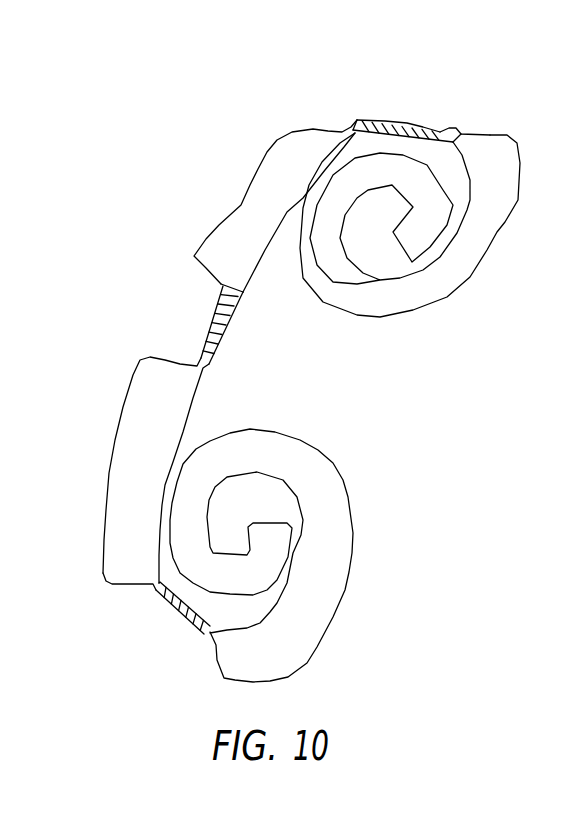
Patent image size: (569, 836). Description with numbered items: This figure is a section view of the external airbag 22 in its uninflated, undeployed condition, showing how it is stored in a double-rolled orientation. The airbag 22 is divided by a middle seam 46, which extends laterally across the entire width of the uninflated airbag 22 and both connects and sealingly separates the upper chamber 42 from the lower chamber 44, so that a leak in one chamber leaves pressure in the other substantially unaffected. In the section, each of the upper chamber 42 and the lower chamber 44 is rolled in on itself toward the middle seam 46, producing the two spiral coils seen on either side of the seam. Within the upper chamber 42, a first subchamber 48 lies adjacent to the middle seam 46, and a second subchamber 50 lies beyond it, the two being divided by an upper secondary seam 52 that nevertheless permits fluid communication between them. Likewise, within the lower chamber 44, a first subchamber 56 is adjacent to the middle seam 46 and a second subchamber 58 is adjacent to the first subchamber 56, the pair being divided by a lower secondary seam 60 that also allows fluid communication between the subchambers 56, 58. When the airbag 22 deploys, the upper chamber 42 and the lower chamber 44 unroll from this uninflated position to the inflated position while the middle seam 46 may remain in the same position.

The airbag 22 is at (433, 70).
The upper chamber 42 is at (458, 127).
The lower chamber 44 is at (133, 586).
The middle seam 46 is at (224, 328).
The first subchamber 48 is at (240, 204).
The second subchamber 50 is at (505, 222).
The upper secondary seam 52 is at (373, 119).
The first subchamber 56 is at (112, 457).
The second subchamber 58 is at (353, 558).
The lower secondary seam 60 is at (190, 621).